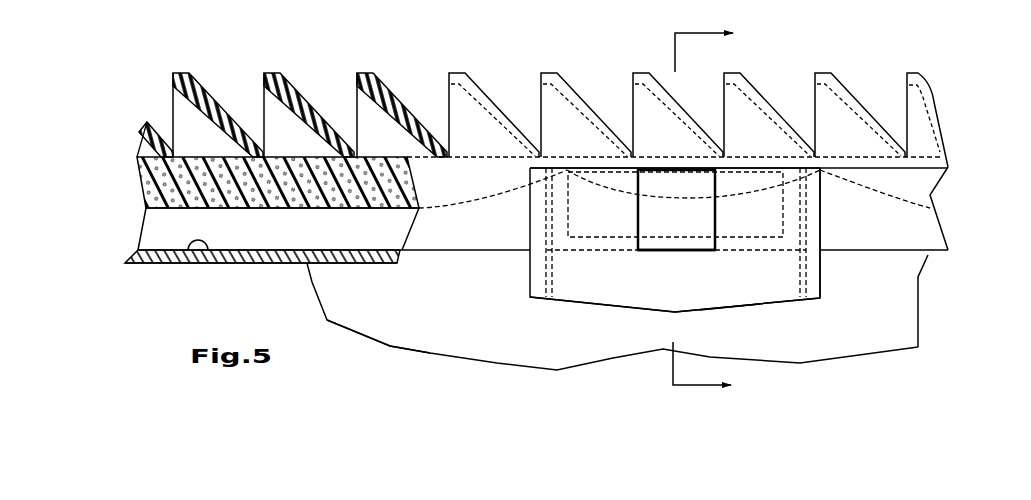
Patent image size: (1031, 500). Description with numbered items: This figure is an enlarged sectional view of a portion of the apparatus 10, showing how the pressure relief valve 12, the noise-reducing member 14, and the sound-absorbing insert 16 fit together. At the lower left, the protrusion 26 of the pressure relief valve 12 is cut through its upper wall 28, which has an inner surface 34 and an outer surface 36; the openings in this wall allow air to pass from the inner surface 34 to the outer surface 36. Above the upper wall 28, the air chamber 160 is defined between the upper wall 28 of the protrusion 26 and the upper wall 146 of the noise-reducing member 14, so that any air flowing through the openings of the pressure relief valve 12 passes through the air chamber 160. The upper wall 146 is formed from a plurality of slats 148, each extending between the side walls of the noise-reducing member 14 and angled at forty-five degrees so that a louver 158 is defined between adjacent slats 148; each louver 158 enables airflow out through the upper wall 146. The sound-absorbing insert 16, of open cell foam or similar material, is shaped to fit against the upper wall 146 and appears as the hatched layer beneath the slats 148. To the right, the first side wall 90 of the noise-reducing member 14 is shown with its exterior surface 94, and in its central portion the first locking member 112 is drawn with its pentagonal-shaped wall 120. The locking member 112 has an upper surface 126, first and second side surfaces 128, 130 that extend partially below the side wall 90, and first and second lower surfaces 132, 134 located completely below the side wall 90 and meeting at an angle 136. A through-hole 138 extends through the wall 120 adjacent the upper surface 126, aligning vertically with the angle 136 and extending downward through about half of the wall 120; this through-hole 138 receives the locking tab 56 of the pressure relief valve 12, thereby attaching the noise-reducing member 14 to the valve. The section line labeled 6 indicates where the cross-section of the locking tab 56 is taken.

The section line 6- 6 is at (715, 210).
The apparatus 10 is at (886, 46).
The pressure relief valve 12 is at (398, 340).
The noise-reducing member 14 is at (928, 109).
The sound-absorbing insert 16 is at (138, 189).
The protrusion 26 is at (442, 315).
The upper wall 28 is at (154, 265).
The inner surface 34 is at (248, 263).
The outer surface 36 is at (192, 263).
The locking tab 56 is at (661, 218).
The first side wall 90 is at (923, 228).
The exterior surface 94 is at (920, 175).
The first locking member 112 is at (785, 275).
The pentagonal-shaped wall 120 is at (723, 280).
The upper surface 126 is at (584, 168).
The first side surface 128 is at (529, 227).
The second side surface 130 is at (821, 231).
The first lower surface 132 is at (560, 300).
The second lower surface 134 is at (737, 308).
The angle 136 is at (675, 312).
The through-hole 138 is at (716, 170).
The upper wall 146 is at (468, 73).
The slat 148 is at (272, 73).
The louver 158 is at (259, 107).
The air chamber 160 is at (301, 240).